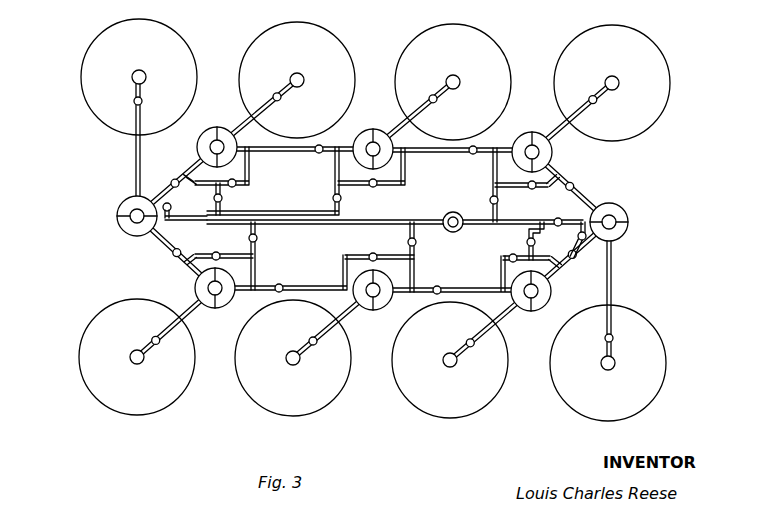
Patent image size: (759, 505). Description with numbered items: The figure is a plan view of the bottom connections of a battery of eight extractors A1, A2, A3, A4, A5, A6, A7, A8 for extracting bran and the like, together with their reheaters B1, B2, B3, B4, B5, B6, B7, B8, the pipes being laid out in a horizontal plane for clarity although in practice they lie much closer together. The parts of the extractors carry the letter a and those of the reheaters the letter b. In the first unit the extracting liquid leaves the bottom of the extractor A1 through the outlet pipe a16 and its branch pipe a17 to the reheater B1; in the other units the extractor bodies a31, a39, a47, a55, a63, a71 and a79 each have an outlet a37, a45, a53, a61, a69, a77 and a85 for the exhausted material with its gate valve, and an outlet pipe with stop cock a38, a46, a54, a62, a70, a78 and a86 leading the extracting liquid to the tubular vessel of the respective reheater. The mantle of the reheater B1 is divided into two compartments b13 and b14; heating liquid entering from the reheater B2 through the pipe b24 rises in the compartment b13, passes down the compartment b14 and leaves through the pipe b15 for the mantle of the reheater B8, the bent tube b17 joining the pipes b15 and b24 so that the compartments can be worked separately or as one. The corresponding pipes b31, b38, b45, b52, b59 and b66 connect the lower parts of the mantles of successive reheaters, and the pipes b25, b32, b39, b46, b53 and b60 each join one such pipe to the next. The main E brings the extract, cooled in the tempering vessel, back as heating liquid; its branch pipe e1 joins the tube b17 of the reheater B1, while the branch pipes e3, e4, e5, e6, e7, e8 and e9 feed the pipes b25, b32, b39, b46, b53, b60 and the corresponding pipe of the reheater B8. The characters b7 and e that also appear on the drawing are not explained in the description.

The extractor A1 is at (129, 355).
The extractor A2 is at (301, 359).
The extractor A3 is at (458, 361).
The extractor A4 is at (616, 328).
The extractor A5 is at (624, 89).
The extractor A6 is at (460, 85).
The extractor A7 is at (305, 82).
The extractor A8 is at (126, 115).
The extractor part letter a is at (85, 347).
The outlet pipe a16 is at (141, 365).
The branch pipe a17 is at (170, 330).
The body a31 is at (345, 385).
The outlet for exhausted material a37 is at (297, 366).
The outlet pipe a38 is at (320, 330).
The body a39 is at (501, 393).
The outlet for exhausted material a45 is at (455, 369).
The outlet pipe a46 is at (476, 331).
The body a47 is at (652, 397).
The outlet for exhausted material a53 is at (613, 370).
The outlet pipe a54 is at (615, 284).
The body a55 is at (672, 81).
The outlet for exhausted material a61 is at (620, 79).
The outlet pipe a62 is at (584, 113).
The body a63 is at (510, 64).
The outlet for exhausted material a69 is at (461, 81).
The outlet pipe a70 is at (428, 111).
The body a71 is at (354, 62).
The outlet for exhausted material a77 is at (305, 80).
The outlet pipe a78 is at (269, 112).
The body a79 is at (96, 105).
The outlet for exhausted material a85 is at (143, 74).
The outlet pipe a86 is at (135, 147).
The reheater B1 is at (215, 305).
The reheater B2 is at (373, 312).
The reheater B3 is at (530, 313).
The reheater B4 is at (626, 232).
The reheater B5 is at (533, 140).
The reheater B6 is at (374, 138).
The reheater B7 is at (216, 135).
The reheater B8 is at (125, 207).
The pivot link b7 is at (170, 210).
The compartment b13 is at (230, 296).
The compartment b14 is at (196, 289).
The pipe b15 is at (181, 263).
The bent tube b17 is at (232, 247).
The pipe b24 is at (316, 285).
The pipe b25 is at (368, 247).
The pipe b31 is at (494, 290).
The pipe b32 is at (502, 260).
The pipe b38 is at (574, 260).
The pipe b39 is at (578, 238).
The pipe b45 is at (581, 191).
The pipe b46 is at (520, 188).
The pipe b52 is at (468, 155).
The pipe b53 is at (360, 186).
The pipe b59 is at (281, 152).
The pipe b60 is at (251, 181).
The pipe b66 is at (183, 175).
The pipe-system E is at (421, 220).
The central pivot of bar E e is at (455, 233).
The branch pipe e1 is at (258, 229).
The branch pipe e3 is at (415, 250).
The branch pipe e4 is at (527, 243).
The branch pipe e5 is at (557, 219).
The branch pipe e6 is at (493, 196).
The branch pipe e7 is at (334, 199).
The branch pipe e8 is at (222, 199).
The branch pipe e9 is at (171, 222).